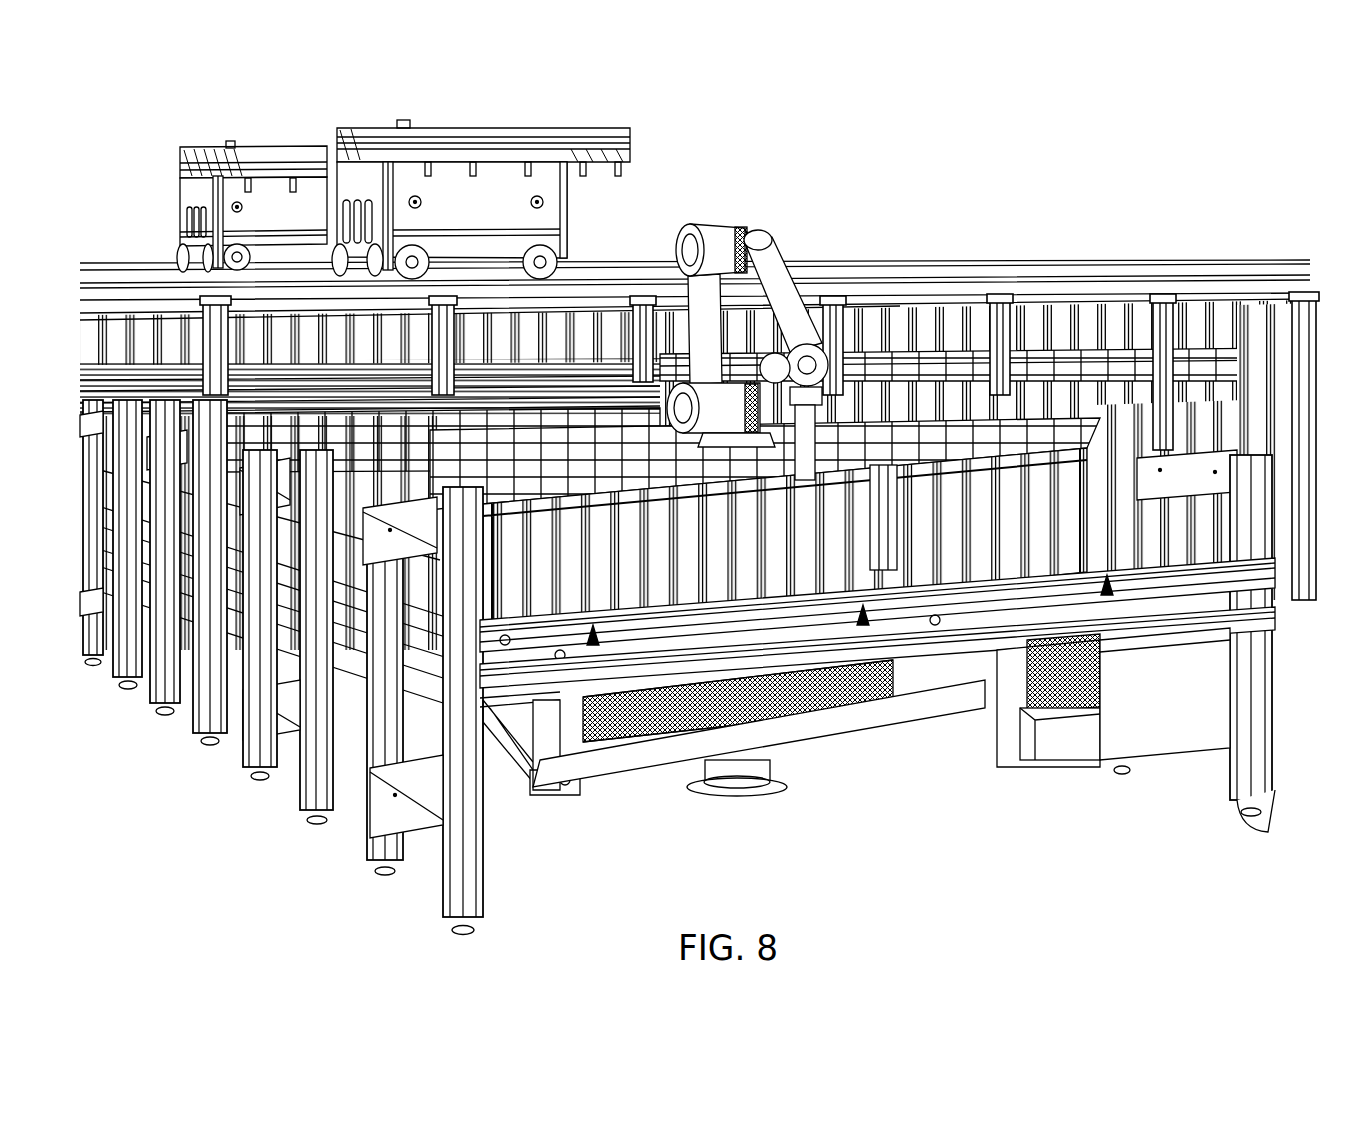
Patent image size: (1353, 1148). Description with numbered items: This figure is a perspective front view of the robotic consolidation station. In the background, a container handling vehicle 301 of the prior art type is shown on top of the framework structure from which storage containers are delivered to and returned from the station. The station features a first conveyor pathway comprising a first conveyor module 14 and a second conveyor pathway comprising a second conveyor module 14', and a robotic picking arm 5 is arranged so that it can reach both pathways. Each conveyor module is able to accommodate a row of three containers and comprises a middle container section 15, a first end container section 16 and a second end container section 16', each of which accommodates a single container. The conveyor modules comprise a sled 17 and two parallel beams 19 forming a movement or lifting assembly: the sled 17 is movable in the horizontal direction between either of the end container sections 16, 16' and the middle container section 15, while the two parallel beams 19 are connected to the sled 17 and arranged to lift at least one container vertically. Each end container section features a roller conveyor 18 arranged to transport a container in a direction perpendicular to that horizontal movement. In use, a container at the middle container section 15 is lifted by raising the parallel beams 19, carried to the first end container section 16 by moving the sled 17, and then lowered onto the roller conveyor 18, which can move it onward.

The container handling vehicle 301 is at (470, 135).
The robotic picking arm 5 is at (770, 300).
The first conveyor module 14 is at (135, 578).
The second conveyor module 14' is at (208, 646).
The first end container section 16 is at (877, 727).
The parallel beams 19 is at (692, 655).
The sled 17 is at (823, 737).
The middle container section 15 is at (857, 710).
The second end container section 16' is at (1055, 709).
The roller conveyor 18 is at (1137, 593).